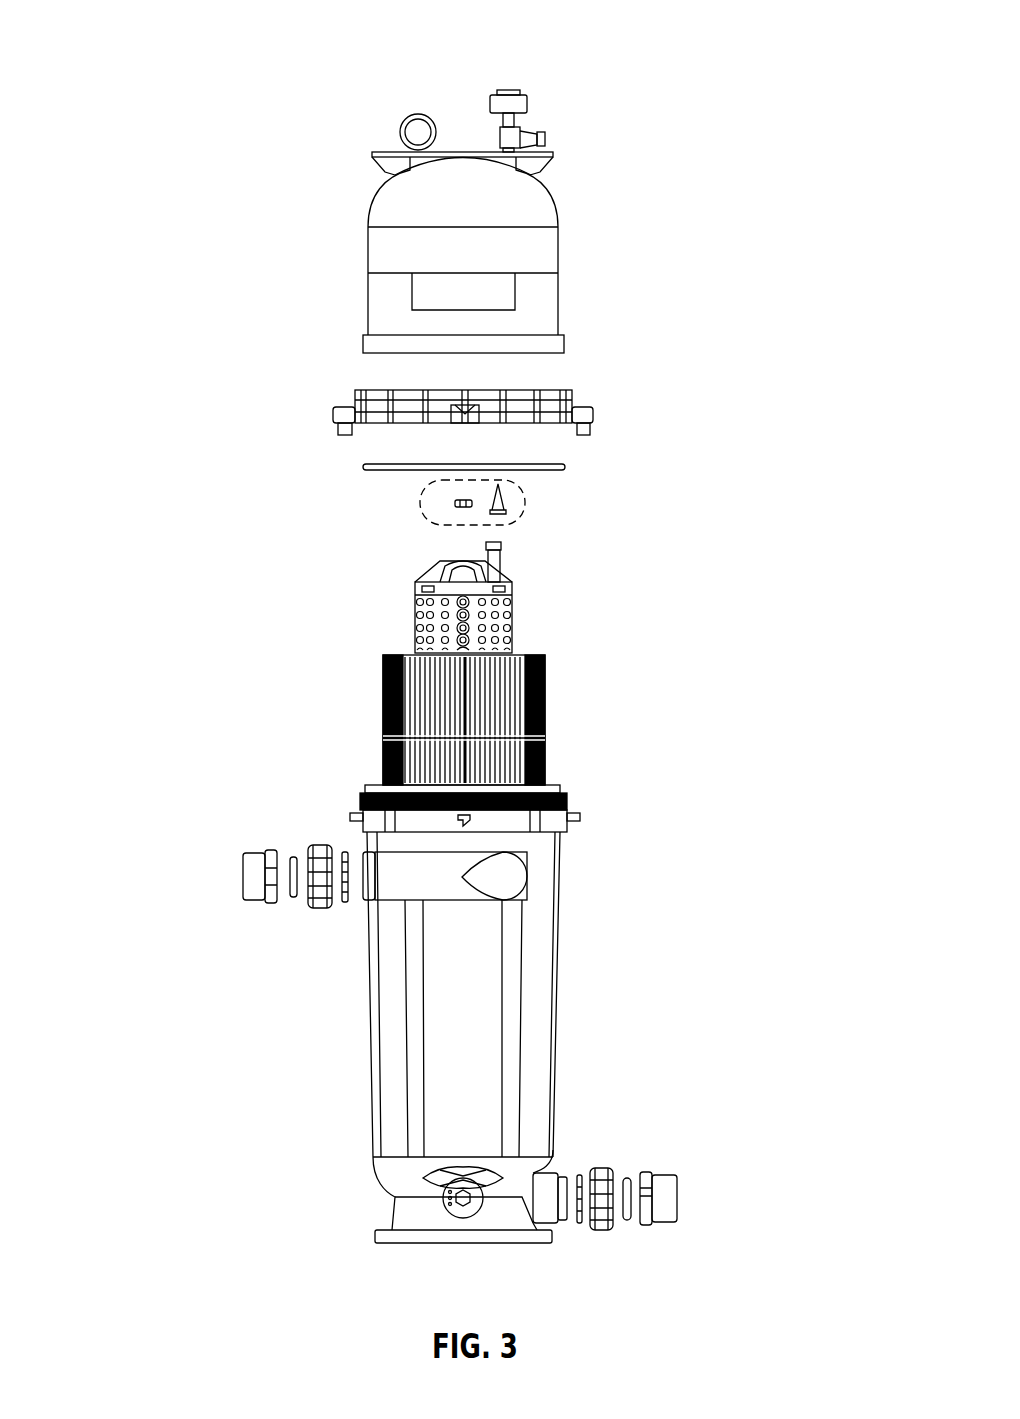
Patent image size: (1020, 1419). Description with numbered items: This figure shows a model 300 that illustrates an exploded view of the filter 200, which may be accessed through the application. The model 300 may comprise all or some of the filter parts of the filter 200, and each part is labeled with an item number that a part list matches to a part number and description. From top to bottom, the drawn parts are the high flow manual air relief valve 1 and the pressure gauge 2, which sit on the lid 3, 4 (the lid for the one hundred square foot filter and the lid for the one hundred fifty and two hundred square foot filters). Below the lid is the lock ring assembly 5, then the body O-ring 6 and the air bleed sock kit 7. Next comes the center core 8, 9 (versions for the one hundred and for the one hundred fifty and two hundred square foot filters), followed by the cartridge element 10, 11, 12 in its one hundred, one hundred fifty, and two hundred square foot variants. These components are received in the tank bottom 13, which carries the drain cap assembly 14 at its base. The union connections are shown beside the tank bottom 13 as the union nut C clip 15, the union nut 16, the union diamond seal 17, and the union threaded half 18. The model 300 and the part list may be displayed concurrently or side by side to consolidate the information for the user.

The model 300 is at (212, 50).
The filter 200 is at (316, 246).
The high flow manual air relief valve 1 is at (532, 101).
The pressure gauge 2 is at (417, 108).
The lid 3 is at (508, 252).
The lid 4 is at (568, 251).
The lock ring assembly 5 is at (588, 388).
The body O-ring 6 is at (567, 468).
The air bleed sock kit 7 is at (540, 505).
The center core 8 is at (510, 597).
The center core 9 is at (522, 591).
The cartridge element 10 is at (538, 732).
The cartridge element 11 is at (538, 732).
The cartridge element 12 is at (556, 705).
The tank bottom 13 is at (568, 990).
The drain cap assembly 14 is at (472, 1166).
The union nut C clip 15 is at (580, 1166).
The union nut 16 is at (603, 1240).
The union diamond seal 17 is at (628, 1166).
The union threaded half 18 is at (690, 1199).